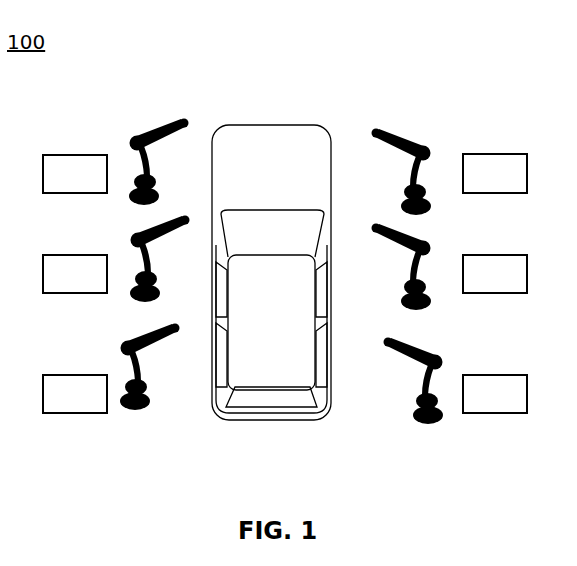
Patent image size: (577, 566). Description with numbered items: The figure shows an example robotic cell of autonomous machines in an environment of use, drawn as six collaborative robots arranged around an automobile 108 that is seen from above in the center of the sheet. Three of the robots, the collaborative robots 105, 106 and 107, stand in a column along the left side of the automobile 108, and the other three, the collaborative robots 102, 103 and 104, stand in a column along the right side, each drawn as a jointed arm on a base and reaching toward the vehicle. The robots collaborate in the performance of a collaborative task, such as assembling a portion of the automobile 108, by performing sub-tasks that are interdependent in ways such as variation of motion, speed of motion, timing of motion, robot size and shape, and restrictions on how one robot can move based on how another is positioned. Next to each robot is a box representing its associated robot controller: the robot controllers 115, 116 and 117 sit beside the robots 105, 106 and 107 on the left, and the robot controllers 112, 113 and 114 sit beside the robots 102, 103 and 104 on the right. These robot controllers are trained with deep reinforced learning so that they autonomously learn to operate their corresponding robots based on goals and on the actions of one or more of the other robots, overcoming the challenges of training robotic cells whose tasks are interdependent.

The collaborative robot 102 is at (424, 152).
The collaborative robot 103 is at (424, 247).
The collaborative robot 104 is at (436, 361).
The collaborative robot 105 is at (136, 142).
The collaborative robot 106 is at (137, 239).
The collaborative robot 107 is at (127, 347).
The automobile 108 is at (275, 125).
The robot controller 112 is at (495, 173).
The robot controller 113 is at (495, 274).
The robot controller 114 is at (495, 394).
The robot controller 115 is at (75, 174).
The robot controller 116 is at (75, 274).
The robot controller 117 is at (75, 394).